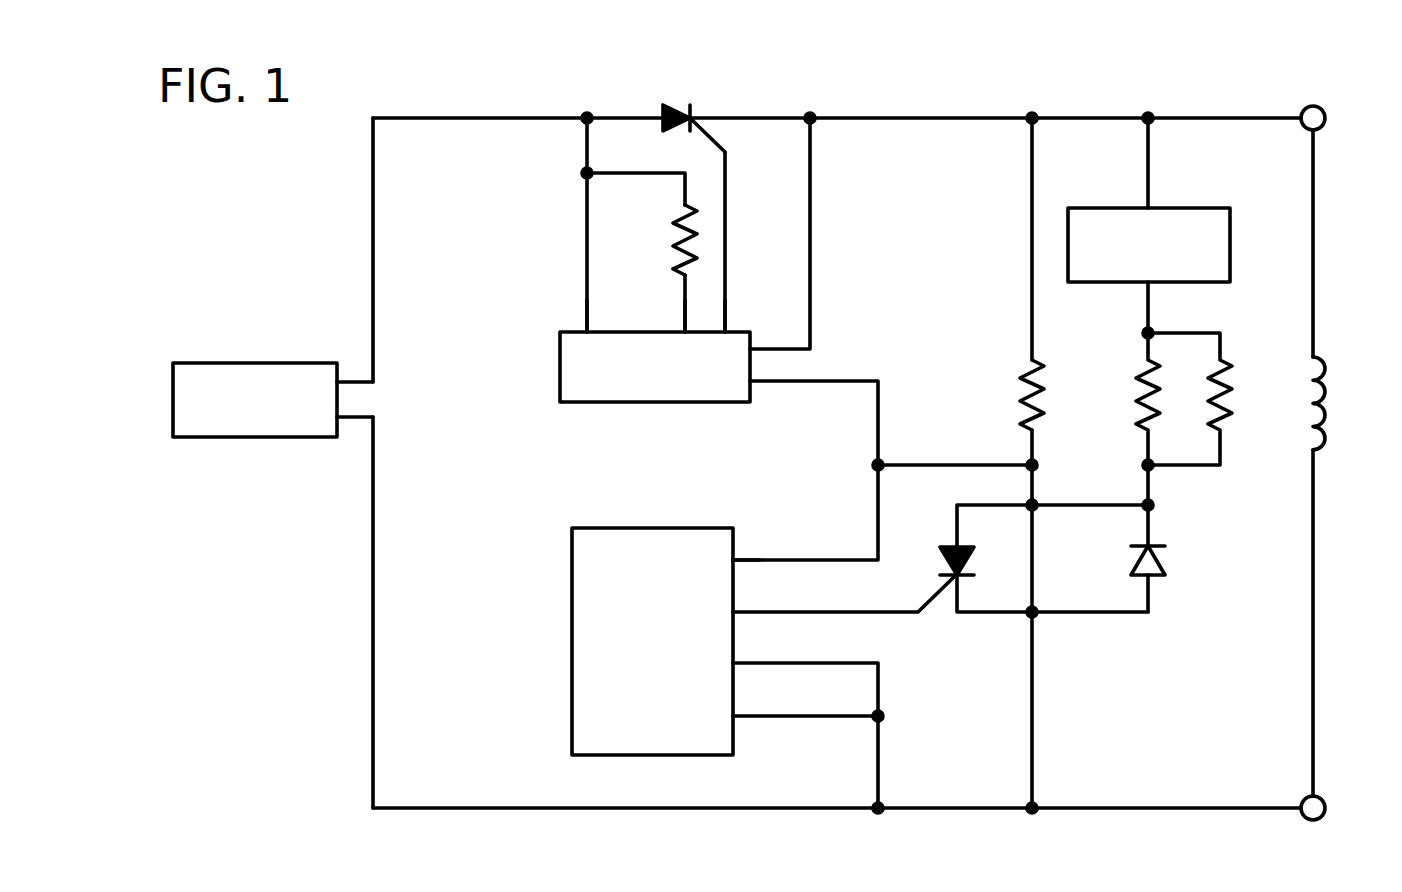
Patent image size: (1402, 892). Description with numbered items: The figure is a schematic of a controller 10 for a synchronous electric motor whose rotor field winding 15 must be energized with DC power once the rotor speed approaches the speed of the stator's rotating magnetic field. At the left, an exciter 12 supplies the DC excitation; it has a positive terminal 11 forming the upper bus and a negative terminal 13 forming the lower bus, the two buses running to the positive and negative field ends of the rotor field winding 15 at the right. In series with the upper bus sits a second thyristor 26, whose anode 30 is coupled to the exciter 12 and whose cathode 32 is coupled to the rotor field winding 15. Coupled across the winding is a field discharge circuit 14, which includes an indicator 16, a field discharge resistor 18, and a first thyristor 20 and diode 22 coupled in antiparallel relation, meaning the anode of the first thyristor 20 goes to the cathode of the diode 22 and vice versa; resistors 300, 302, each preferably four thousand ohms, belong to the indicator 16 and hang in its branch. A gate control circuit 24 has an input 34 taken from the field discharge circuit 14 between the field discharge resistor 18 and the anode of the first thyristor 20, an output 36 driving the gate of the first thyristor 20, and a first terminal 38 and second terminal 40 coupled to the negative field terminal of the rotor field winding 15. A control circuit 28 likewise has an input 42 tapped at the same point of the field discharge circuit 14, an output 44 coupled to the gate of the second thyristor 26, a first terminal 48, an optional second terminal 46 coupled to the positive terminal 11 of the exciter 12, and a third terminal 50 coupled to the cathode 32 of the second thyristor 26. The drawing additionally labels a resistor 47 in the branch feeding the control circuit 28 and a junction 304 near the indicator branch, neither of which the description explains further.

The controller 10 is at (415, 854).
The positive terminal 11 is at (472, 118).
The exciter 12 is at (243, 363).
The negative terminal 13 is at (462, 808).
The field discharge circuit 14 is at (1008, 207).
The rotor field winding 15 is at (1325, 398).
The indicator 16 is at (1185, 207).
The field discharge resistor 18 is at (1022, 395).
The first thyristor 20 is at (965, 572).
The diode 22 is at (1165, 580).
The gate control circuit 24 is at (655, 528).
The second thyristor 26 is at (673, 90).
The control circuit 28 is at (560, 390).
The anode 30 is at (660, 112).
The cathode 32 is at (695, 112).
The input 34 is at (740, 558).
The output 36 is at (740, 612).
The first terminal 38 is at (740, 663).
The second terminal 40 is at (740, 718).
The input 42 is at (752, 387).
The output 44 is at (728, 330).
The second terminal 46 is at (587, 330).
The resistor 47 is at (675, 226).
The first terminal 48 is at (683, 330).
The third terminal 50 is at (832, 221).
The resistor 300 is at (1232, 403).
The resistor 302 is at (1138, 395).
The junction 304 is at (1150, 483).